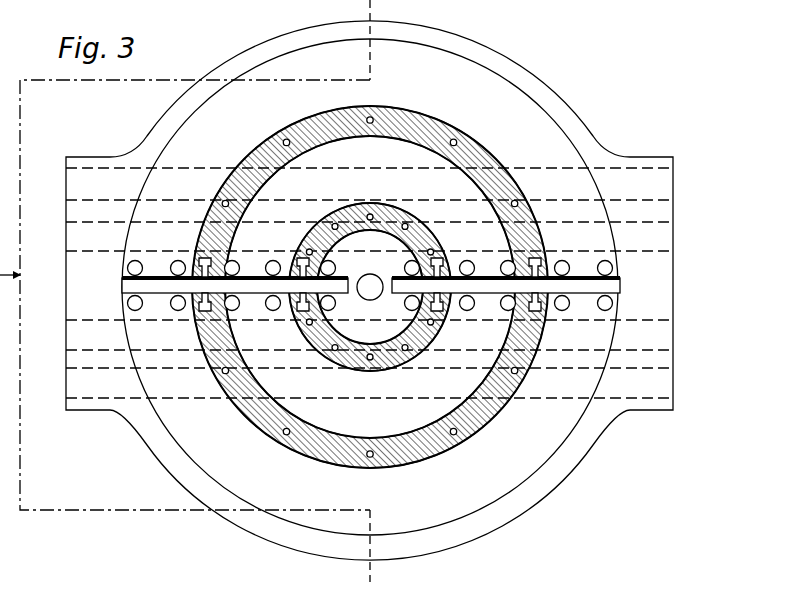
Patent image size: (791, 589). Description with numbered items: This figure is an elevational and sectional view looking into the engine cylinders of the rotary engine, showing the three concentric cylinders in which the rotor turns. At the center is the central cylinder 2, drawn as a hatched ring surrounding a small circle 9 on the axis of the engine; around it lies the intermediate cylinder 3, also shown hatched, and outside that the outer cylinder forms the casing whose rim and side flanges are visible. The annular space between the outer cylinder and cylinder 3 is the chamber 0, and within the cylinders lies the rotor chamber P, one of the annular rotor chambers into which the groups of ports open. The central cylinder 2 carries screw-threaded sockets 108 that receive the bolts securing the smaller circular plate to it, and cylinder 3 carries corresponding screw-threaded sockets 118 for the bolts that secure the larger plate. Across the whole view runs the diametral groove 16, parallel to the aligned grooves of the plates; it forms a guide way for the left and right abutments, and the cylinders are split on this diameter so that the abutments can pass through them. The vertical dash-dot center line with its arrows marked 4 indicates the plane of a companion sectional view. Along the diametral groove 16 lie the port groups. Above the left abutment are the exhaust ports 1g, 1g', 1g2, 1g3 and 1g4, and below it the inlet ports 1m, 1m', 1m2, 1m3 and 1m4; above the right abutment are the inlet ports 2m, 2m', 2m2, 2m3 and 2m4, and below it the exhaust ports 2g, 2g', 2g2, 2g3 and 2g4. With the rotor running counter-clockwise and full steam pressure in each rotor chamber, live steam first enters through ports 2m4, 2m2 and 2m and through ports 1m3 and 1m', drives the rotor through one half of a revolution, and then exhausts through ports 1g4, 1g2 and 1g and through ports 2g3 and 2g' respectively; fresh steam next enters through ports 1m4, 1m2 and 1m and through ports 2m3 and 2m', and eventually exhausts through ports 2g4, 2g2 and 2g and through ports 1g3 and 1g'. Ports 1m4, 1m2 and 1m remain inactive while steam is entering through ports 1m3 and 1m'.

The rotor chamber P is at (336, 290).
The annular chamber 0 is at (370, 287).
The center line / section axis 4 is at (370, 0).
The intermediate cylinder 3 is at (424, 452).
The screw-threaded sockets 118 is at (284, 436).
The central cylinder 2 is at (410, 362).
The screw-threaded sockets 108 is at (370, 360).
The diametral groove 16 is at (131, 280).
The central shaft 9 is at (370, 274).
The exhaust port 1g is at (138, 258).
The exhaust port 1g' is at (178, 258).
The exhaust port 1g2 is at (237, 258).
The exhaust port 1g3 is at (277, 258).
The exhaust port 1g4 is at (336, 260).
The steam inlet port 1m is at (141, 311).
The steam inlet port 1m' is at (178, 311).
The steam inlet port 1m2 is at (240, 311).
The steam inlet port 1m3 is at (277, 311).
The steam inlet port 1m4 is at (339, 310).
The steam inlet port 2m is at (602, 258).
The steam inlet port 2m' is at (567, 258).
The steam inlet port 2m2 is at (507, 258).
The steam inlet port 2m3 is at (468, 258).
The steam inlet port 2m4 is at (401, 258).
The exhaust port 2g is at (603, 311).
The exhaust port 2g' is at (569, 311).
The exhaust port 2g2 is at (507, 311).
The exhaust port 2g3 is at (472, 311).
The exhaust port 2g4 is at (401, 311).